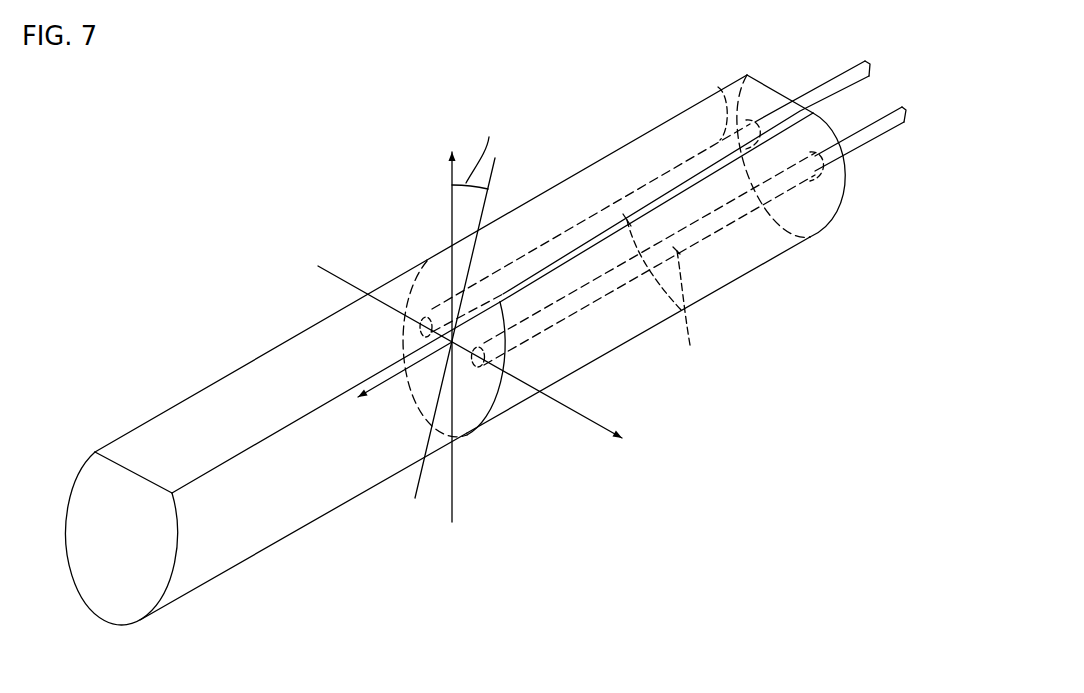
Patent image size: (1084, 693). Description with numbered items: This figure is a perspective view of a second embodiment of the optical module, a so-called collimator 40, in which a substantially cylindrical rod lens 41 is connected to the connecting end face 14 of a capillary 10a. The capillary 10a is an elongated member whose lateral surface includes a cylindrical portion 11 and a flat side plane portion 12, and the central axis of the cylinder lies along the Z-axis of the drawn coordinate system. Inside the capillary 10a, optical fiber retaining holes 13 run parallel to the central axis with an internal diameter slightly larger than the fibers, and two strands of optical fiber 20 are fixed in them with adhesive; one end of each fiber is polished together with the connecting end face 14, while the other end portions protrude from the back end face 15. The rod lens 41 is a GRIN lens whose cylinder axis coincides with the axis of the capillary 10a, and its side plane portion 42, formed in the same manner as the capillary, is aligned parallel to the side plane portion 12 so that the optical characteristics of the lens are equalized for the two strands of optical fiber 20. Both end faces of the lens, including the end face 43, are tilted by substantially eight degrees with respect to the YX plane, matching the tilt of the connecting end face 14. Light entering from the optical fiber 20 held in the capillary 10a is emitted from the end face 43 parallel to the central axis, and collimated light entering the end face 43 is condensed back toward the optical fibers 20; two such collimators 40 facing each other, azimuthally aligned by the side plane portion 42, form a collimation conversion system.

The collimator 40 is at (384, 192).
The capillary 10a is at (603, 156).
The cylindrical portion 11 is at (752, 250).
The side plane portion 12 is at (672, 134).
The optical fiber retaining hole 13 is at (723, 250).
The connecting end face 14 is at (477, 390).
The back end face 15 is at (830, 188).
The optical fiber 20 is at (838, 88).
The rod lens 41 is at (192, 390).
The side plane portion 42 is at (283, 373).
The end face 43 is at (147, 537).